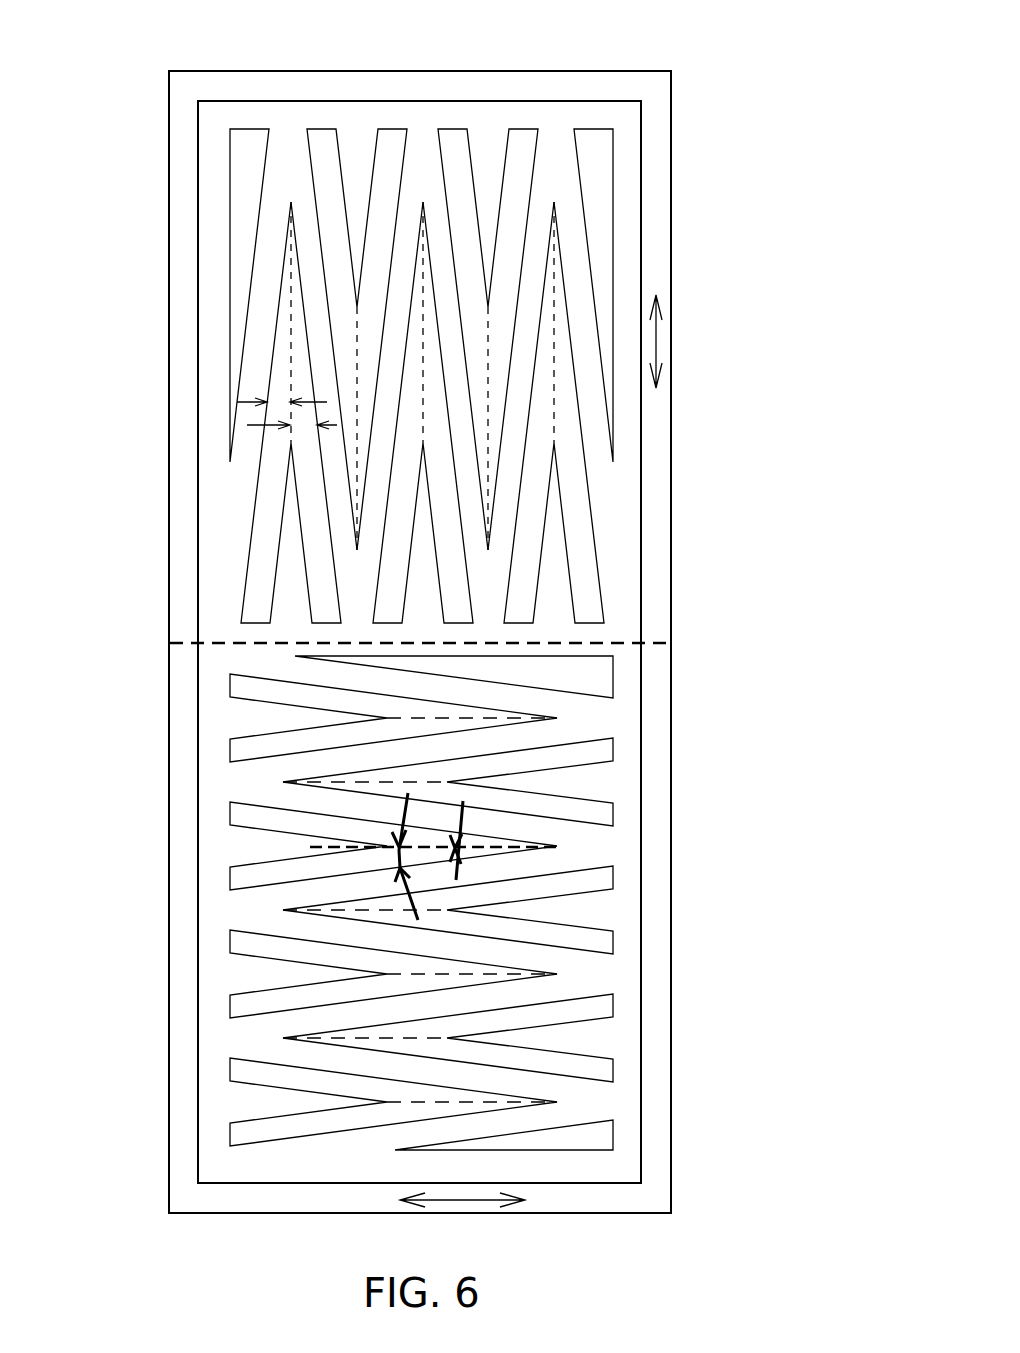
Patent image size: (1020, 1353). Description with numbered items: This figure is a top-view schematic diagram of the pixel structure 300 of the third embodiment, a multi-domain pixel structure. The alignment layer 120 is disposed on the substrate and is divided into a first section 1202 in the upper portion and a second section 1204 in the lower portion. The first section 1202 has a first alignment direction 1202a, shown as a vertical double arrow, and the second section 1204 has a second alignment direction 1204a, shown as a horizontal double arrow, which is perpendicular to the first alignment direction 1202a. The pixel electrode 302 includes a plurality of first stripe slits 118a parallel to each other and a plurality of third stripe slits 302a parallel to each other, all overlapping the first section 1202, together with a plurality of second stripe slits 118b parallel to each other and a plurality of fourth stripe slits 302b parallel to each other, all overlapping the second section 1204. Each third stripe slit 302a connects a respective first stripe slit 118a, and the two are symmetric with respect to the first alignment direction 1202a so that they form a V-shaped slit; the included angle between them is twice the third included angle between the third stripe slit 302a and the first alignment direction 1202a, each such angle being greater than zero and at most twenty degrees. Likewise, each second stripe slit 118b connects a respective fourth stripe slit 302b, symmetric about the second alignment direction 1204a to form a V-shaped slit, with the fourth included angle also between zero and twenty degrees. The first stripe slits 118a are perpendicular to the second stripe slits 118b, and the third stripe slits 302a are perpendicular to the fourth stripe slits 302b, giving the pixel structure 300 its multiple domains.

The pixel structure 300 is at (681, 81).
The alignment layer 120 is at (672, 200).
The pixel electrode 302 is at (641, 257).
The first section 1202 is at (655, 535).
The second section 1204 is at (657, 1005).
The first alignment direction 1202a is at (655, 343).
The second alignment direction 1204a is at (465, 1201).
The first stripe slits 118a is at (397, 140).
The second stripe slits 118b is at (231, 681).
The third stripe slits 302a is at (335, 147).
The fourth stripe slits 302b is at (231, 745).